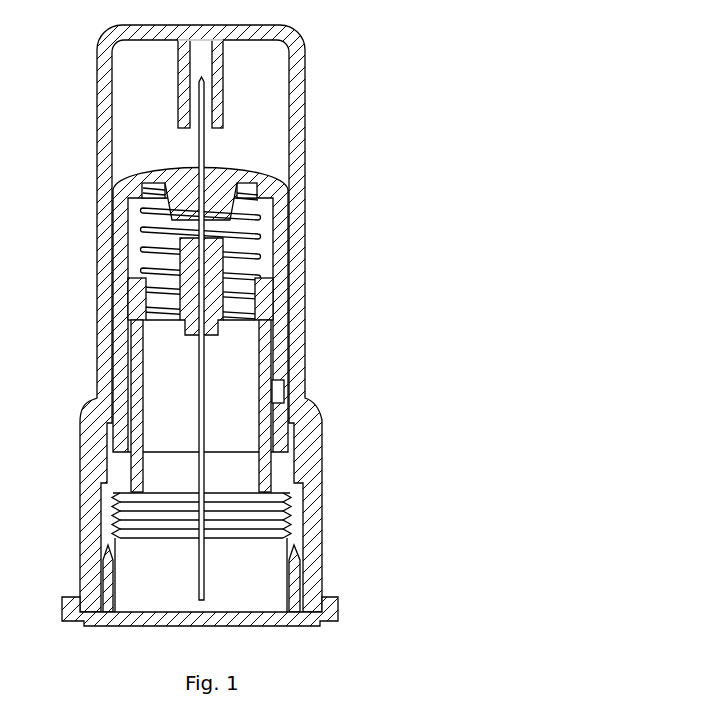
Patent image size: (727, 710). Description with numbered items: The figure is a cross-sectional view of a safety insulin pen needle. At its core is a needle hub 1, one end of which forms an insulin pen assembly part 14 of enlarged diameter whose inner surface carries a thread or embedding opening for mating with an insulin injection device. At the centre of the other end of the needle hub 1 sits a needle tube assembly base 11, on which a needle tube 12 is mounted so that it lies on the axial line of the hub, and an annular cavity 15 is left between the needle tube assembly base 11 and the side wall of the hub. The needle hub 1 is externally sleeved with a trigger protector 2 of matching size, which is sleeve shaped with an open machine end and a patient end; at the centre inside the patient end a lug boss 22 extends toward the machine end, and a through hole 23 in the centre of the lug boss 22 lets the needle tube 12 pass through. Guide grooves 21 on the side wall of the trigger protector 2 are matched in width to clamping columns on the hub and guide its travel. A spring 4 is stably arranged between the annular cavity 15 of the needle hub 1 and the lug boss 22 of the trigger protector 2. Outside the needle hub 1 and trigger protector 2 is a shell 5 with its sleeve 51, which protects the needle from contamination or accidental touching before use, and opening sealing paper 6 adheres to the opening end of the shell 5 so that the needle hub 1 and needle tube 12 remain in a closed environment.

The needle hub 1 is at (265, 466).
The trigger protector 2 is at (282, 331).
The spring 4 is at (148, 267).
The shell 5 is at (318, 419).
The opening sealing paper 6 is at (198, 628).
The needle tube assembly base 11 is at (218, 288).
The needle tube 12 is at (205, 140).
The insulin pen assembly part 14 is at (290, 574).
The annular cavity 15 is at (152, 297).
The guide groove 21 is at (278, 392).
The lug boss 22 is at (147, 187).
The through hole 23 is at (192, 172).
The sleeve 51 is at (220, 82).